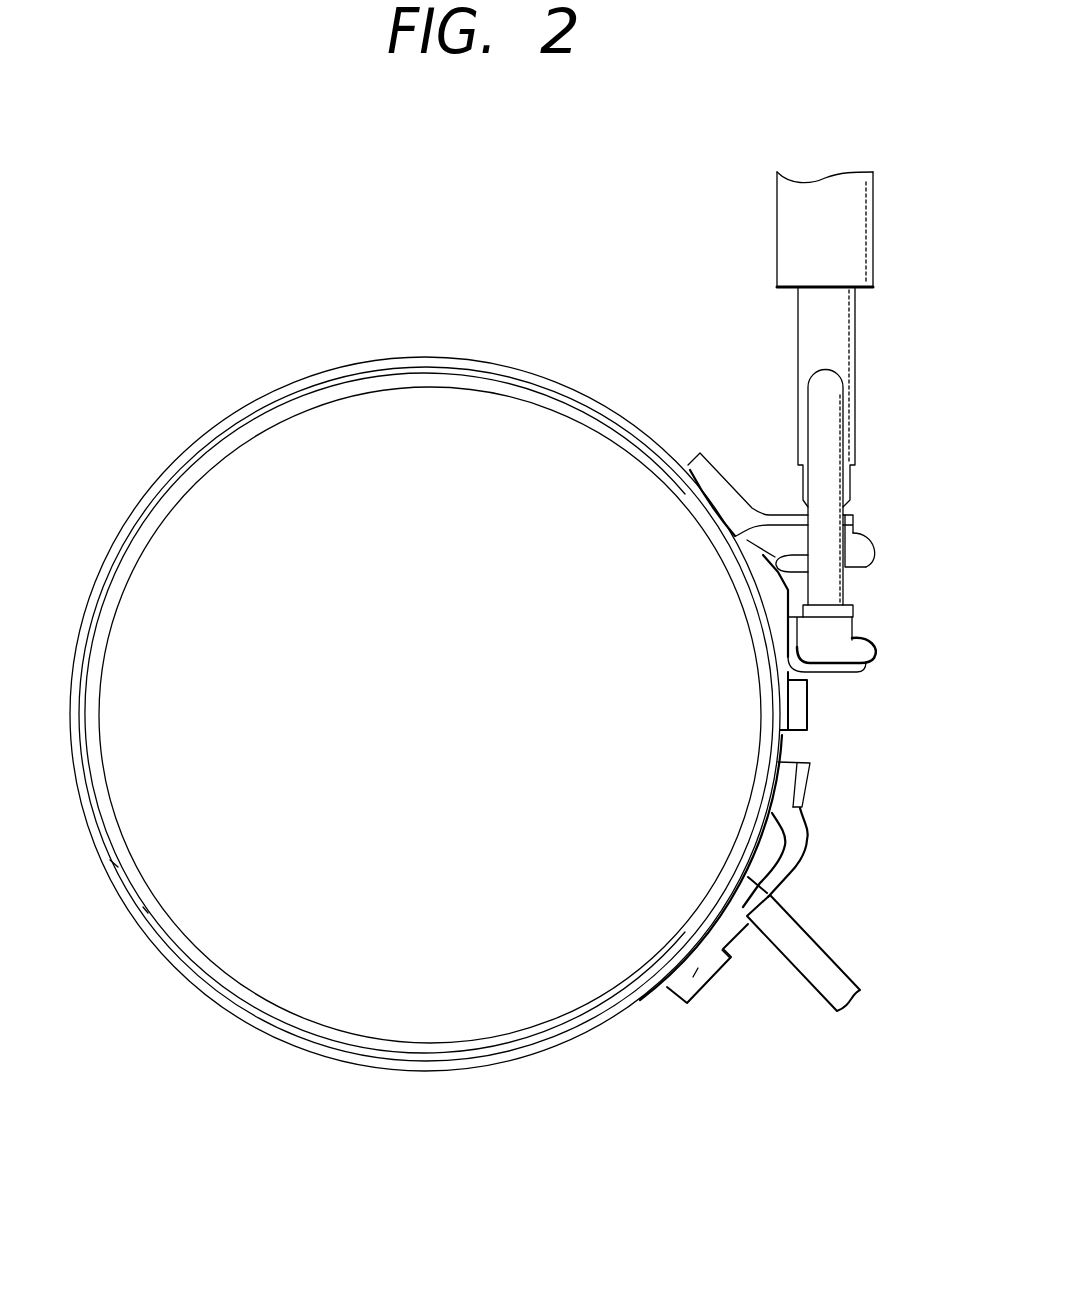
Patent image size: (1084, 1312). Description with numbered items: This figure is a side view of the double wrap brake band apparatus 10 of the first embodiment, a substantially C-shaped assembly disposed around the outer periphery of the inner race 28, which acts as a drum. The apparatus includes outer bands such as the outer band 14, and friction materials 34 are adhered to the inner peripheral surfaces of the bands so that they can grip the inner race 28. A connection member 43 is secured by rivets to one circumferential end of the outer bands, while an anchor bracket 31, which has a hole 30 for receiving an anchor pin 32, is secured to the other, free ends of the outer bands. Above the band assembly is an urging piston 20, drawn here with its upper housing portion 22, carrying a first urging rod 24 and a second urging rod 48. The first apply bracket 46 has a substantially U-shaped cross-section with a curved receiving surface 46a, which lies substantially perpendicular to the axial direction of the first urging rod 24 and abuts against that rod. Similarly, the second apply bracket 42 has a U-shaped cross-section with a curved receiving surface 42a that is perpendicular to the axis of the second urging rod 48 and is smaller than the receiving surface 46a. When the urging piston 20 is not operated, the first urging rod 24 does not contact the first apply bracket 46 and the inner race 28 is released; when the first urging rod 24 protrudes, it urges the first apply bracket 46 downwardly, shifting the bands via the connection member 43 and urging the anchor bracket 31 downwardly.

The double wrap brake band apparatus 10 is at (555, 318).
The outer band 14 is at (207, 433).
The urging piston 20 is at (828, 163).
The nut 22 is at (862, 215).
The first urging rod 24 is at (855, 487).
The inner race 28 is at (355, 973).
The hole 30 is at (780, 888).
The anchor bracket 31 is at (790, 790).
The anchor pin 32 is at (817, 947).
The friction material 34 is at (210, 987).
The second apply bracket 42 is at (874, 663).
The receiving surface 42a is at (855, 605).
The connection member 43 is at (803, 718).
The first apply bracket 46 is at (876, 555).
The receiving surface 46a is at (779, 512).
The second urging rod 48 is at (833, 410).